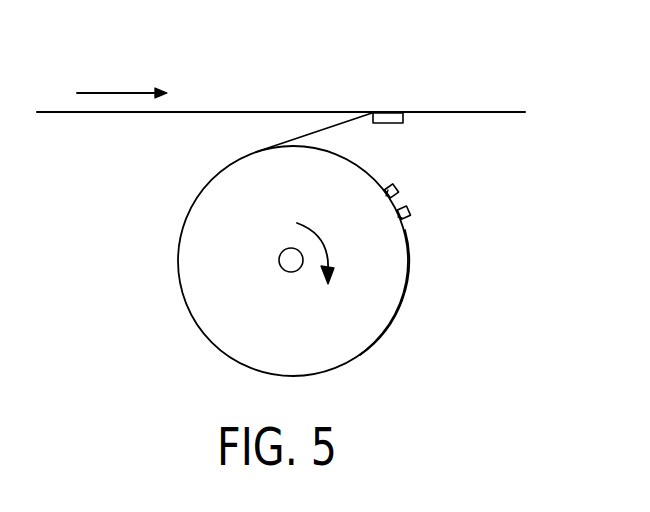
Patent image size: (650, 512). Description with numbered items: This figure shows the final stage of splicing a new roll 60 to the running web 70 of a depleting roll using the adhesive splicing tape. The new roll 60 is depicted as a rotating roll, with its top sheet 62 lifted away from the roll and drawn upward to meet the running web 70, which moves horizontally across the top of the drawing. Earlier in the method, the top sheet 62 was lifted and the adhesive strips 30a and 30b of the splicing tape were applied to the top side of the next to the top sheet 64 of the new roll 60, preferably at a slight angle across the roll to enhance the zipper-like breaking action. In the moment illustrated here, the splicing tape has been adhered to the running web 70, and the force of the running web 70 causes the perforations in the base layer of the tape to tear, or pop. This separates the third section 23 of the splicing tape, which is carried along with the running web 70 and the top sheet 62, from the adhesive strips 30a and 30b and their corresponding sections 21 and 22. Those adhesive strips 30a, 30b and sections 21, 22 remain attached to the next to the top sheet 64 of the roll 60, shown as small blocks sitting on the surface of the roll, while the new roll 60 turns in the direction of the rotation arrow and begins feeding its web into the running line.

The running web 70 is at (252, 111).
The top sheet 62 is at (327, 128).
The third section 23 is at (424, 131).
The adhesive strip 30a is at (390, 184).
The section 21 is at (399, 186).
The section 22 is at (410, 210).
The adhesive strip 30b is at (408, 222).
The new roll 60 is at (195, 293).
The next to the top sheet 64 is at (387, 328).